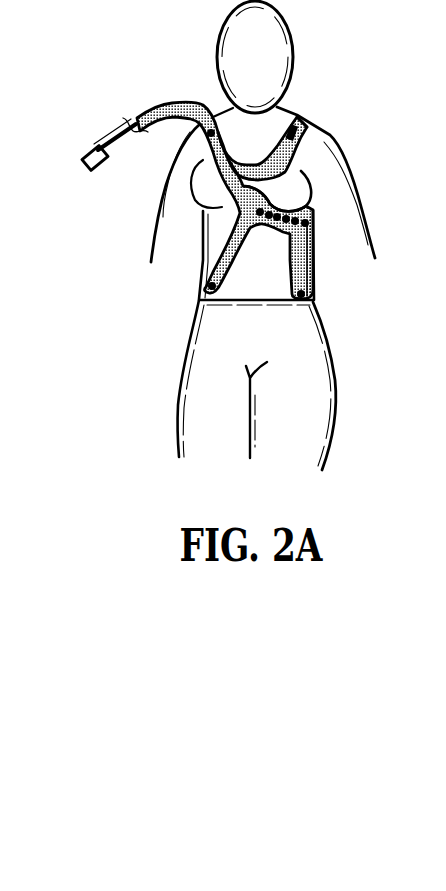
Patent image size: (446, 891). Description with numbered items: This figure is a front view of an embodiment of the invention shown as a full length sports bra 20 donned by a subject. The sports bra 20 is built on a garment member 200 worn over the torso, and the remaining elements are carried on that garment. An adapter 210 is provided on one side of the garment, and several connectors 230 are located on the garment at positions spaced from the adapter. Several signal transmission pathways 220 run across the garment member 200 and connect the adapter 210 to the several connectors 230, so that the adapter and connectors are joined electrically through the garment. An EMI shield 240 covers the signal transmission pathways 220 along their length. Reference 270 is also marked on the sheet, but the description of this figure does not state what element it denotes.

The full length sports bra 20 is at (216, 185).
The garment member 200 is at (158, 355).
The adapter 210 is at (99, 105).
The signal transmission pathways 220 is at (207, 216).
The connectors 230 is at (350, 280).
The EMI shield 240 is at (222, 233).
The external device 270 is at (434, 658).